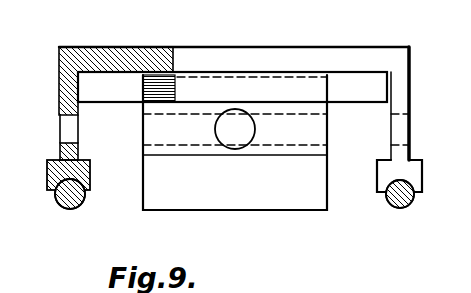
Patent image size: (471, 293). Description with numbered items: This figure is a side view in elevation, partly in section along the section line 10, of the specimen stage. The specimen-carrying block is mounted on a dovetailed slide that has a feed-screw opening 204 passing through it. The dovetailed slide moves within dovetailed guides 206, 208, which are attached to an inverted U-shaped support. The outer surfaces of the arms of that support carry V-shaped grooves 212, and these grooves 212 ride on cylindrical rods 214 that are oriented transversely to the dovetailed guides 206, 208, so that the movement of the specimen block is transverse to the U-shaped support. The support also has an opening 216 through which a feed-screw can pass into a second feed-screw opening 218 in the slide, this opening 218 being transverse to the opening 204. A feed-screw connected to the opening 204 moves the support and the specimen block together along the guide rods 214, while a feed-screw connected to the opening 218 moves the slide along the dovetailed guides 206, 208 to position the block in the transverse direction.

The section line 10 is at (358, 35).
The feed-screw opening 204 is at (217, 128).
The dovetailed guide 206 is at (108, 96).
The dovetailed guide 208 is at (365, 80).
The V-shaped groove 212 is at (385, 194).
The cylindrical rod 214 is at (75, 208).
The opening 216 is at (72, 123).
The feed-screw opening 218 is at (303, 113).